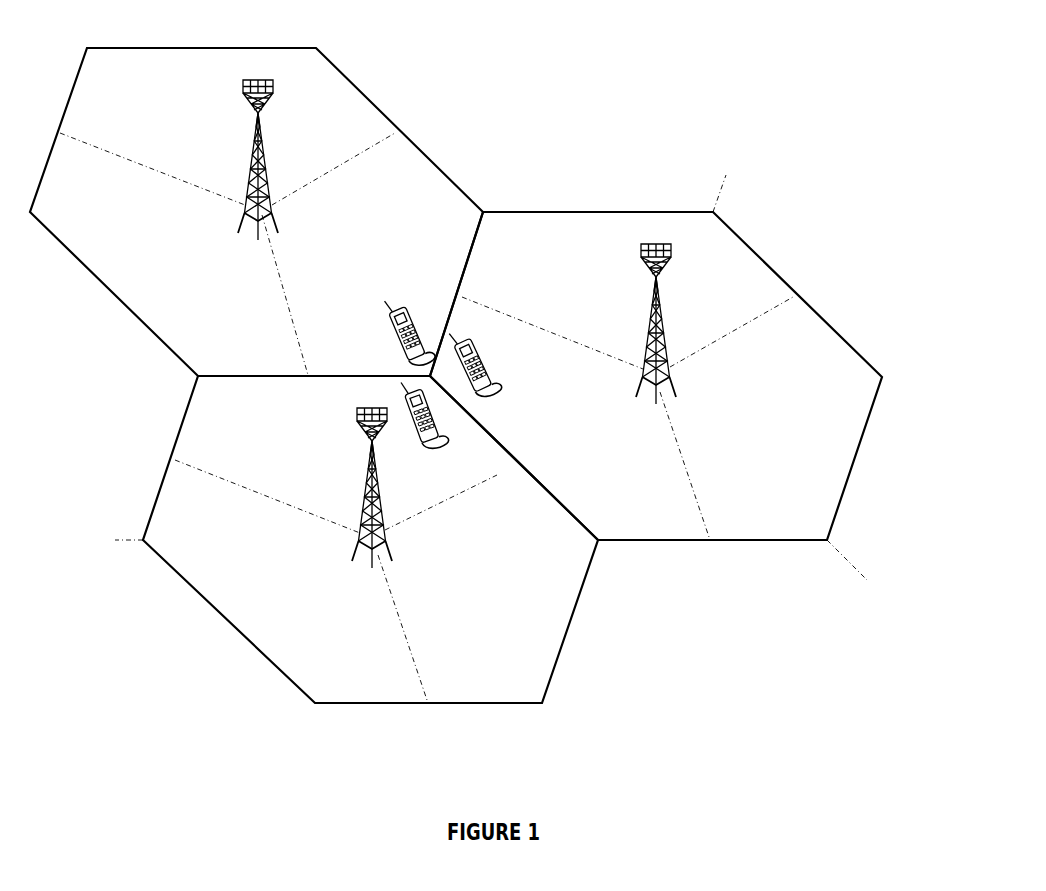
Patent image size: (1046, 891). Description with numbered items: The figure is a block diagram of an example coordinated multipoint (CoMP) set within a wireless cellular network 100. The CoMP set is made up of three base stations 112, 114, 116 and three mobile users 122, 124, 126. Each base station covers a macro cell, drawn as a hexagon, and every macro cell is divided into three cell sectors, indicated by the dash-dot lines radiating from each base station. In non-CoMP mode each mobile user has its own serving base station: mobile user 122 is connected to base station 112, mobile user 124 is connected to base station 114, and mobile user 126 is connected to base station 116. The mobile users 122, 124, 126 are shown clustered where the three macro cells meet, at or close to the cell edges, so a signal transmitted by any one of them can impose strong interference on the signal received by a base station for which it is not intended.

The wireless cellular network 100 is at (728, 100).
The base station 112 is at (270, 160).
The base station 114 is at (643, 324).
The base station 116 is at (357, 488).
The mobile user 122 is at (390, 330).
The mobile user 124 is at (479, 362).
The mobile user 126 is at (436, 418).